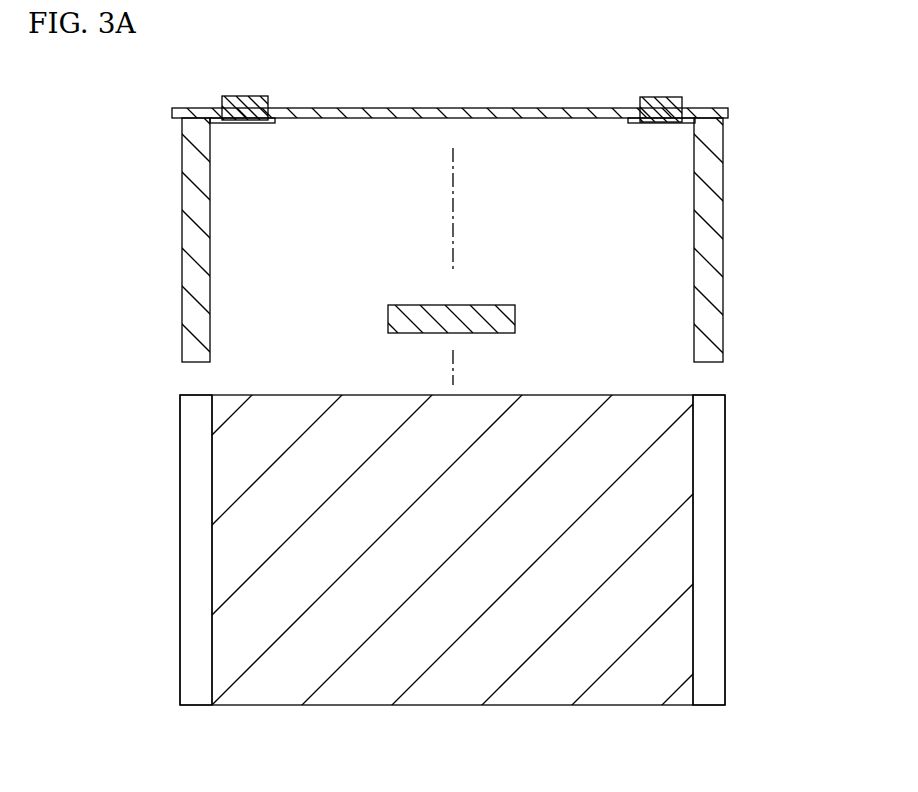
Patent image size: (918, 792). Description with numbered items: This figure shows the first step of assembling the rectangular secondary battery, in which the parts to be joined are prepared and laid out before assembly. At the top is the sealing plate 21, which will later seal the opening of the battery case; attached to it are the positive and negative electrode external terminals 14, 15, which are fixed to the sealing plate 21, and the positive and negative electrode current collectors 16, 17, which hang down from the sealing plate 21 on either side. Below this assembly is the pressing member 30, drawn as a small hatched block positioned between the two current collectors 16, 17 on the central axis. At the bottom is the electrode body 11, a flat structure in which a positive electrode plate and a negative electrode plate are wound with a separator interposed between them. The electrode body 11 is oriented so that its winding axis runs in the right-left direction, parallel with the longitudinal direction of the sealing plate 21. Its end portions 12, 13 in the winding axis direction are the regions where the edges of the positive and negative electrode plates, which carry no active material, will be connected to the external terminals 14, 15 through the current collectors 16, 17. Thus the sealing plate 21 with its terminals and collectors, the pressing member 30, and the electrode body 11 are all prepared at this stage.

The electrode body 11 is at (433, 685).
The end portion 12 is at (195, 548).
The end portion 13 is at (710, 538).
The positive electrode external terminal 14 is at (250, 93).
The negative electrode external terminal 15 is at (656, 94).
The positive electrode current collector 16 is at (190, 222).
The negative electrode current collector 17 is at (712, 235).
The sealing plate 21 is at (468, 106).
The pressing member 30 is at (500, 304).